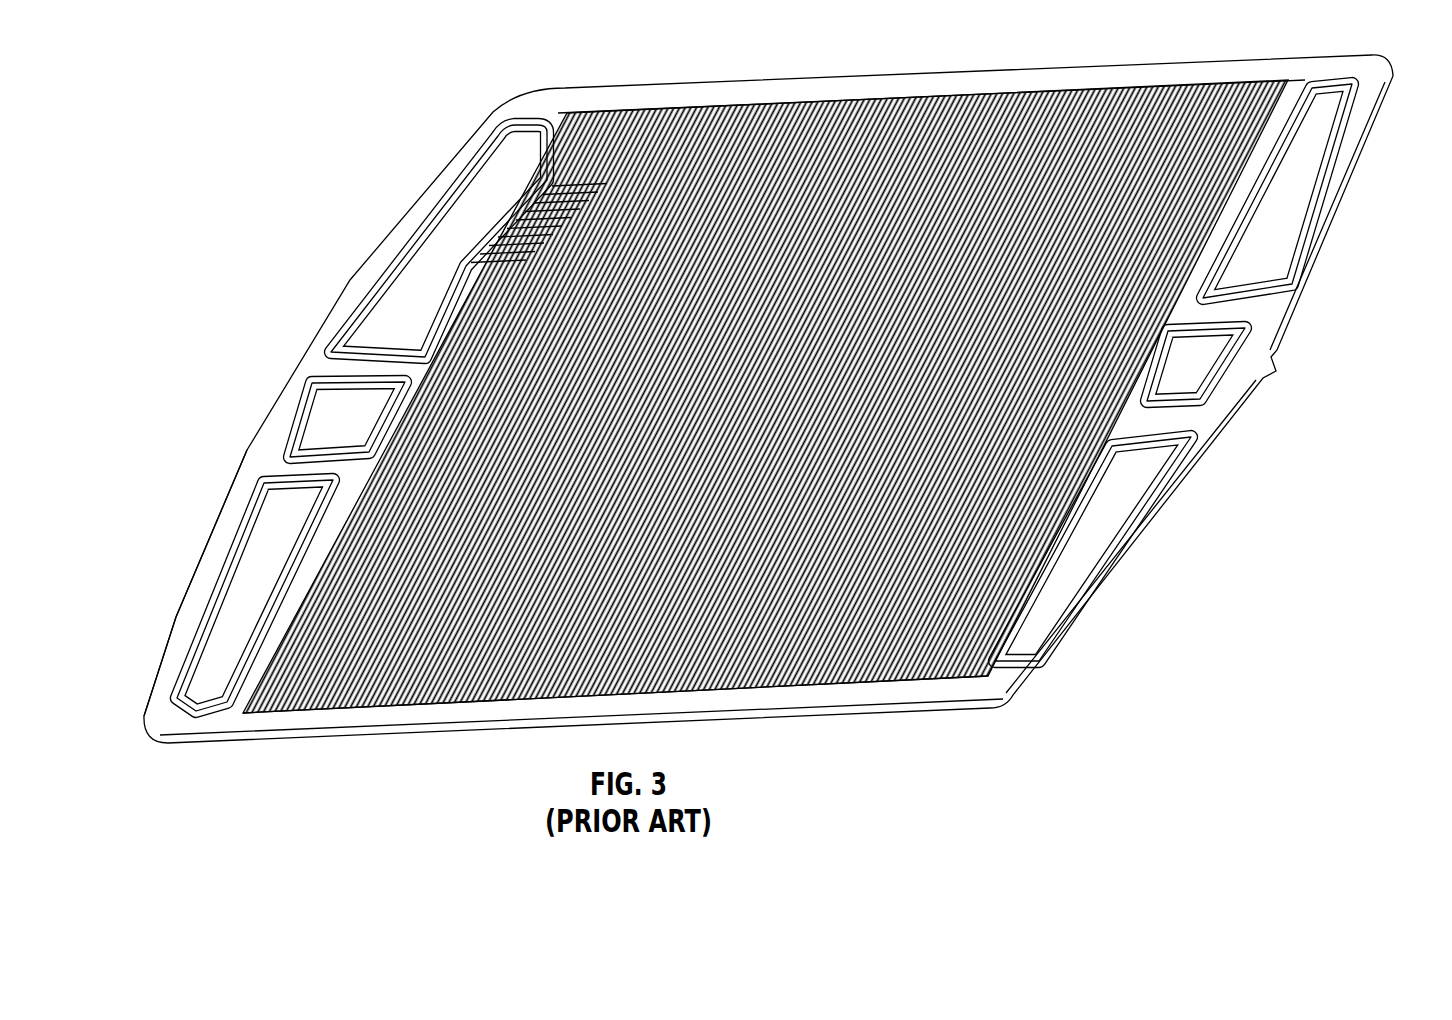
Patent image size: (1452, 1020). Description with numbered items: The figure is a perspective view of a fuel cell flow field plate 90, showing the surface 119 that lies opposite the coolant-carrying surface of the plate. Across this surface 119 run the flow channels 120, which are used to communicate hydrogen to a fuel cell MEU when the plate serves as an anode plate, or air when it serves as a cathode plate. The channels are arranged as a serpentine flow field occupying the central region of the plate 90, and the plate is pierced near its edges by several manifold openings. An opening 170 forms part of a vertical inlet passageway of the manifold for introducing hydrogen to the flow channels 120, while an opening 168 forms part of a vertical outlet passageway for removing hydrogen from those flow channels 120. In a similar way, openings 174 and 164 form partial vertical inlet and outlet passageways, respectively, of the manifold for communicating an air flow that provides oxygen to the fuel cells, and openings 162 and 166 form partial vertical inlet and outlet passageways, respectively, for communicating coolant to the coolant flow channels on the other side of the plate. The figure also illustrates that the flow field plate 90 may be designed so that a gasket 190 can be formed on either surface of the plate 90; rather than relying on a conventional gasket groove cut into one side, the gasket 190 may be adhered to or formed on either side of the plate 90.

The flow field plate 90 is at (1008, 703).
The surface 119 is at (700, 700).
The flow channels 120 is at (700, 632).
The opening 162 is at (1198, 390).
The opening 164 is at (1273, 247).
The opening 166 is at (336, 433).
The opening 168 is at (1062, 570).
The opening 170 is at (430, 273).
The opening 174 is at (212, 642).
The gasket 190 is at (188, 618).